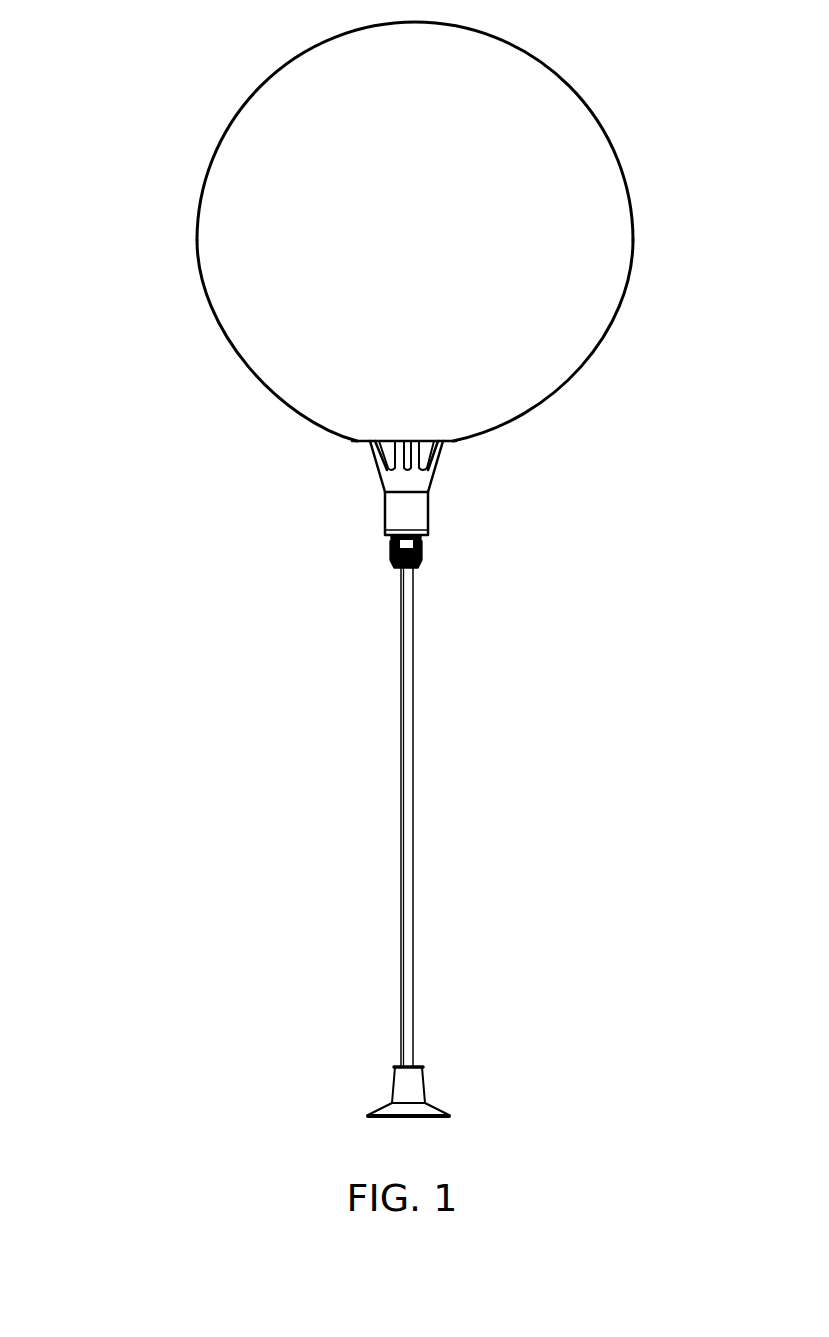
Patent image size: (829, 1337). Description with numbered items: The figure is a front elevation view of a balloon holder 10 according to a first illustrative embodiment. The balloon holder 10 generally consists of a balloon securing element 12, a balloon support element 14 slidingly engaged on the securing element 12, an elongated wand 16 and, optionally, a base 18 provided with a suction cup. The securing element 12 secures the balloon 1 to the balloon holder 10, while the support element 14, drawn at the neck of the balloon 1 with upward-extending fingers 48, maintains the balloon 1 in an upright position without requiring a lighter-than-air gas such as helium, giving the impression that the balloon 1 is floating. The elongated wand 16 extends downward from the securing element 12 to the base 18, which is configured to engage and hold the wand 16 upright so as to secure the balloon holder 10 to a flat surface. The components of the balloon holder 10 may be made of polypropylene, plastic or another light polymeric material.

The balloon 1 is at (612, 132).
The balloon holder 10 is at (207, 580).
The balloon securing element 12 is at (430, 547).
The balloon support element 14 is at (442, 503).
The elongated wand 16 is at (410, 776).
The base 18 is at (427, 1097).
The fingers 48 is at (388, 458).